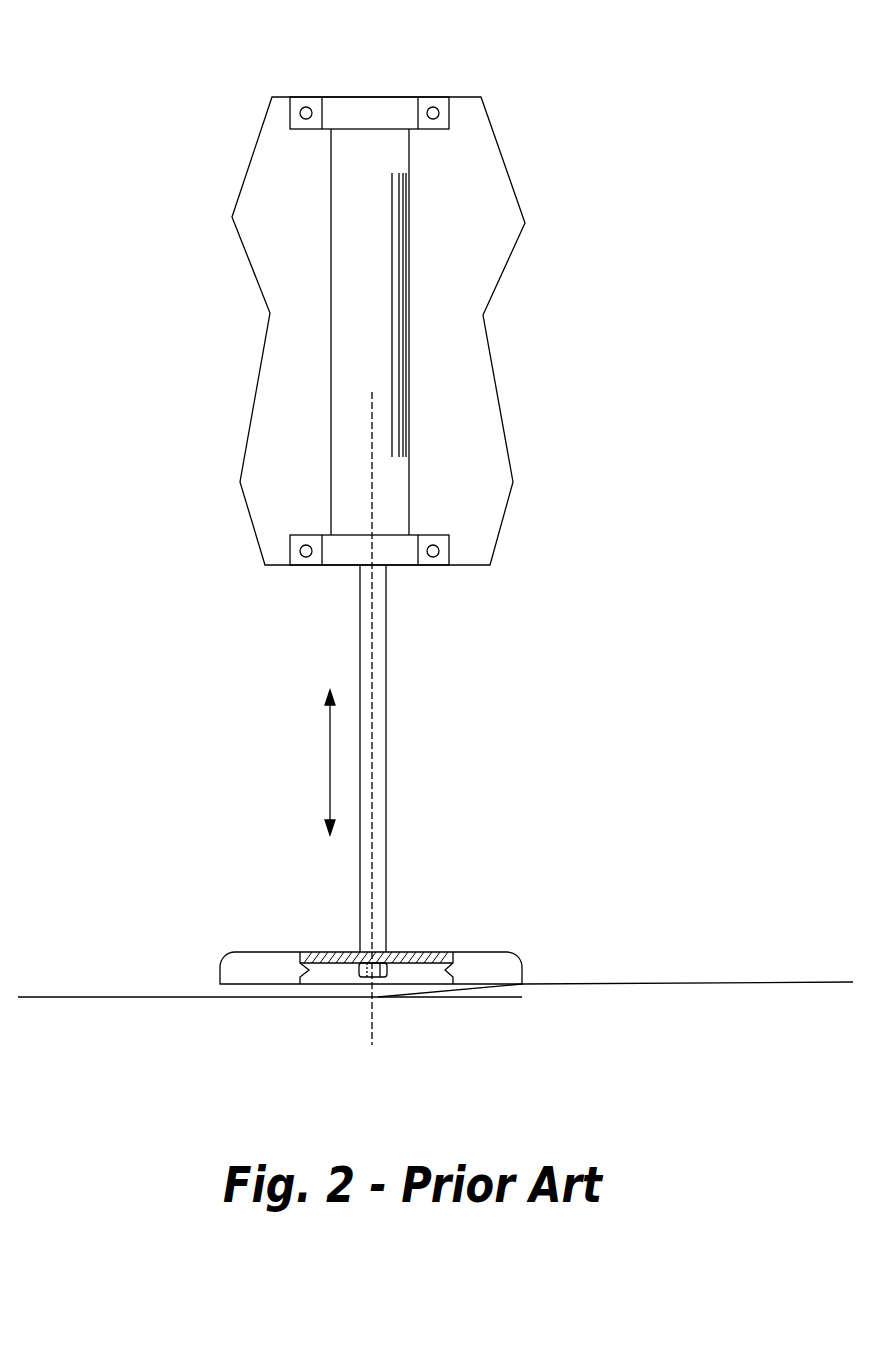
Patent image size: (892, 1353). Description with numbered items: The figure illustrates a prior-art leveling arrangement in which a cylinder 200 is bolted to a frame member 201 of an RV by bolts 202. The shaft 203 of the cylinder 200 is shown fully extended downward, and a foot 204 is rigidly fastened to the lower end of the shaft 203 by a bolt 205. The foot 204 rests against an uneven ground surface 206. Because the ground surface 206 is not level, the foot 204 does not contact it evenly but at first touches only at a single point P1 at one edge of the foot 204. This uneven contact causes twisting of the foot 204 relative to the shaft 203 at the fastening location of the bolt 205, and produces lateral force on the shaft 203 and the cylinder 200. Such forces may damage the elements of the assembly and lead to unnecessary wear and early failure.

The cylinder 200 is at (343, 289).
The frame member 201 is at (250, 223).
The bolts 202 is at (431, 103).
The shaft 203 is at (386, 707).
The foot 204 is at (473, 952).
The bolt 205 is at (377, 986).
The uneven ground surface 206 is at (63, 997).
The point P1 is at (532, 973).